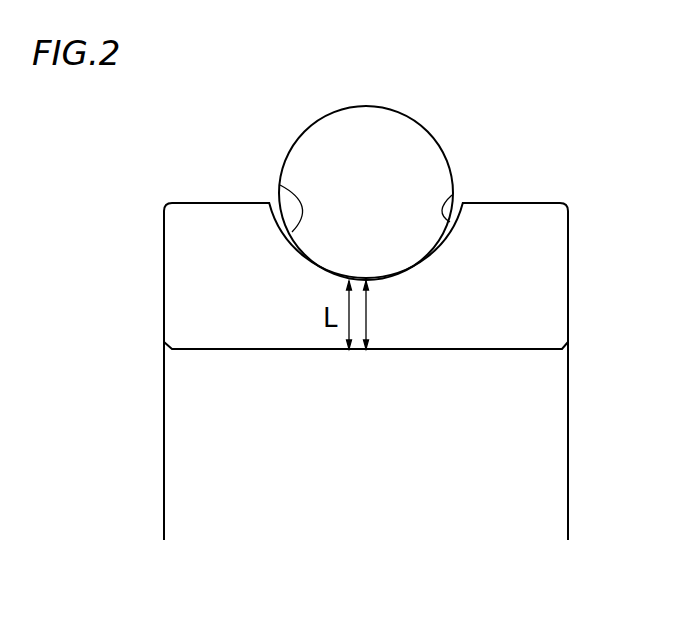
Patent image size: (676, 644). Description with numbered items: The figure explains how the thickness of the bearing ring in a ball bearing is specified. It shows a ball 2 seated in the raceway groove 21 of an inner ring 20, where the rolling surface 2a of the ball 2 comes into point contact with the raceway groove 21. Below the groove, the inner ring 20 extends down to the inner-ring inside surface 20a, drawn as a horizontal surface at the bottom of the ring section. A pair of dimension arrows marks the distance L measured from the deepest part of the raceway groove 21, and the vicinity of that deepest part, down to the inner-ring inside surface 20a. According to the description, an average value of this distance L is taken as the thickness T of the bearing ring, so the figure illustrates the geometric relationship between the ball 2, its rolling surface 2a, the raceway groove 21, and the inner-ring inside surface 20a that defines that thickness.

The ball 2 is at (405, 127).
The rolling surface 2a is at (280, 185).
The inner ring 20 is at (527, 264).
The inner-ring inside surface 20a is at (490, 350).
The raceway groove 21 is at (455, 195).